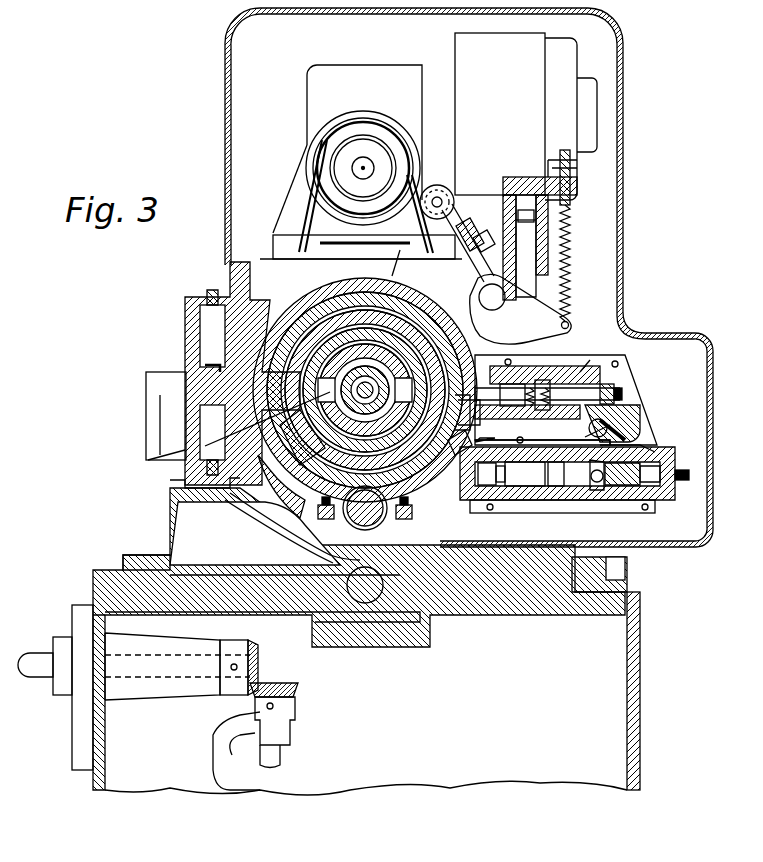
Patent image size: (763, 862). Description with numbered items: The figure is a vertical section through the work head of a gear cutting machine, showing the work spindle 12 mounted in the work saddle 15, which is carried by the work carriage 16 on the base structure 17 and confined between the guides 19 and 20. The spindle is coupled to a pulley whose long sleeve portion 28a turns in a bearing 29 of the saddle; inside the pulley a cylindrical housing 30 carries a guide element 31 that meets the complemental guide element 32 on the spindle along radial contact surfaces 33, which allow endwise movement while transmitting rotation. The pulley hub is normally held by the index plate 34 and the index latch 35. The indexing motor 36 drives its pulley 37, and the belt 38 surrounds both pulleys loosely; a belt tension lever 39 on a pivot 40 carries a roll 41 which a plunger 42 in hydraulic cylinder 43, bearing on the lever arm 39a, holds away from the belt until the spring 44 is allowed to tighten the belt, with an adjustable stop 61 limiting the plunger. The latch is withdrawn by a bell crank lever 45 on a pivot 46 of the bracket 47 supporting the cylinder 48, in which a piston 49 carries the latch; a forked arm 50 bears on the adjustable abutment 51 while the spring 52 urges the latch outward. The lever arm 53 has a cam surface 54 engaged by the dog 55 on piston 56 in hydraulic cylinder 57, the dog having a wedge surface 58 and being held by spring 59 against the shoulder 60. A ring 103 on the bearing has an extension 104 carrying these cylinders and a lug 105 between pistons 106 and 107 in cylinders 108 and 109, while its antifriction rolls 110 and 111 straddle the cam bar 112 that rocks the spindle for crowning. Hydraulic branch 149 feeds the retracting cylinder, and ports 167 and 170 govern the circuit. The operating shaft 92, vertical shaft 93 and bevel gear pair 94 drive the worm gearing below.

The work spindle 12 is at (278, 480).
The work saddle 15 is at (232, 268).
The work carriage 16 is at (493, 578).
The base structure 17 is at (620, 690).
The guide 19 is at (145, 563).
The guide 20 is at (612, 568).
The sleeve portion 28a is at (327, 249).
The bearing 29 is at (402, 260).
The cylindrical housing 30 is at (290, 300).
The guide element 31 is at (280, 432).
The complemental guide element 32 is at (318, 308).
The radial contact surfaces 33 is at (476, 330).
The index plate 34 is at (453, 458).
The index latch 35 is at (460, 420).
The indexing motor 36 is at (465, 65).
The pulley 37 is at (330, 172).
The belt 38 is at (300, 229).
The belt tension lever 39 is at (460, 236).
The lever arm 39a is at (520, 311).
The pivot 40 is at (498, 305).
The roll 41 is at (437, 185).
The plunger 42 is at (524, 281).
The hydraulic cylinder 43 is at (503, 193).
The spring 44 is at (570, 242).
The bell crank lever 45 is at (632, 416).
The pivot 46 is at (640, 427).
The bracket 47 is at (627, 363).
The cylinder 48 is at (610, 350).
The piston 49 is at (515, 380).
The forked arm 50 is at (612, 389).
The adjustable abutment 51 is at (628, 396).
The spring 52 is at (590, 372).
The arm 53 is at (588, 440).
The cam surface 54 is at (590, 486).
The dog 55 is at (600, 490).
The piston 56 is at (537, 486).
The hydraulic cylinder 57 is at (567, 480).
The wedge surface 58 is at (640, 441).
The spring 59 is at (645, 488).
The shoulder 60 is at (622, 486).
The adjustable stop 61 is at (528, 232).
The operating shaft 92 is at (32, 673).
The vertical shaft 93 is at (280, 760).
The bevel gear pair 94 is at (258, 667).
The ring 103 is at (300, 325).
The extension 104 is at (650, 418).
The lug 105 is at (175, 370).
The piston 106 is at (207, 330).
The piston 107 is at (207, 428).
The hydraulic cylinder 108 is at (190, 307).
The hydraulic cylinder 109 is at (185, 458).
The antifriction roll 110 is at (318, 521).
The antifriction roll 111 is at (412, 521).
The cam bar 112 is at (365, 530).
The branch 149 is at (685, 480).
The port 167 is at (504, 486).
The port 170 is at (548, 382).